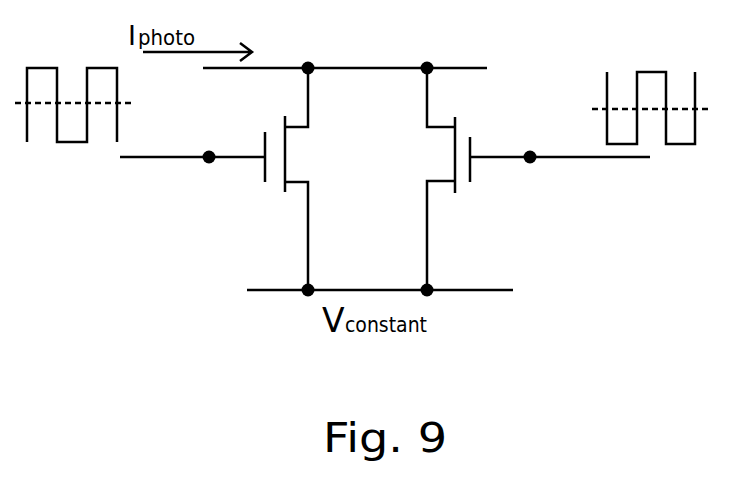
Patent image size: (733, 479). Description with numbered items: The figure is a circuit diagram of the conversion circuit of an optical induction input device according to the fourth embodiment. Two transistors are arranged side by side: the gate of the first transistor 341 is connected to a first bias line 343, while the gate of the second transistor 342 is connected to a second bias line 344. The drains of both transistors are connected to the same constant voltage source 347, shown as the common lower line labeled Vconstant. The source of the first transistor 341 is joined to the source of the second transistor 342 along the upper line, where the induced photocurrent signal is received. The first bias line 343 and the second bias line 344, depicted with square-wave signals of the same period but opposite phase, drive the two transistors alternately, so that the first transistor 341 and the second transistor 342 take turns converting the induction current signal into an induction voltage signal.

The first transistor 341 is at (463, 132).
The second transistor 342 is at (282, 178).
The first bias line 343 is at (603, 158).
The second bias line 344 is at (163, 158).
The constant voltage source 347 is at (500, 292).